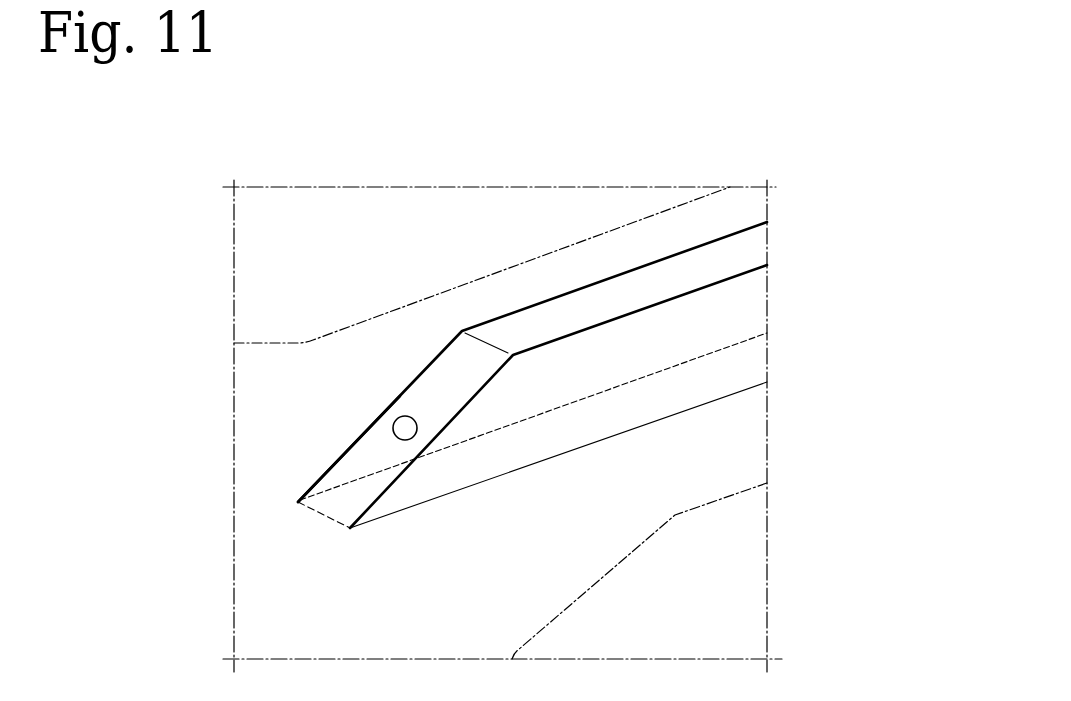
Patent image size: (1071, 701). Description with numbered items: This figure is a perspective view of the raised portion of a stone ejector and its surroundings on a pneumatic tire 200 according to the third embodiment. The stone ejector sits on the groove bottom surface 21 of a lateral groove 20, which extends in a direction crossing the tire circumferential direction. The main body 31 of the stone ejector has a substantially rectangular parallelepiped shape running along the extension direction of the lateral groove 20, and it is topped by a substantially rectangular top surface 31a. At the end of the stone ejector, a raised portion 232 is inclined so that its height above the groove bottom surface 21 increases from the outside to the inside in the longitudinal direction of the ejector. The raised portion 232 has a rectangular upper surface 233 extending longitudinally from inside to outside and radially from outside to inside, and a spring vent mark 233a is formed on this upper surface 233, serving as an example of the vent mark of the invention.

The pneumatic tire 200 is at (742, 176).
The lateral groove 20 is at (745, 390).
The groove bottom surface 21 is at (748, 436).
The main body 31 is at (566, 286).
The top surface 31a is at (630, 287).
The raised portion 232 is at (375, 428).
The upper surface 233 is at (465, 382).
The spring vent mark 233a is at (405, 416).